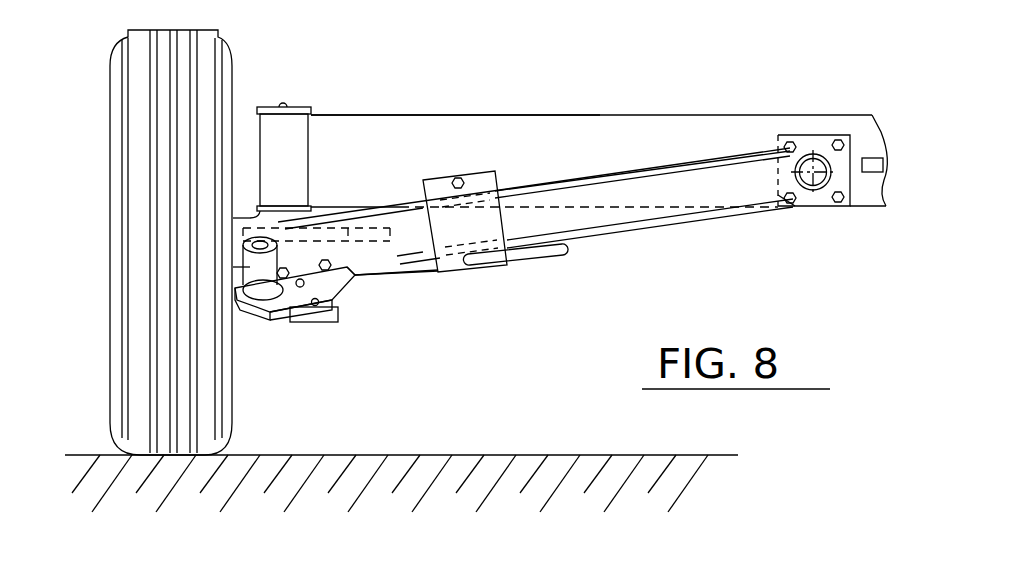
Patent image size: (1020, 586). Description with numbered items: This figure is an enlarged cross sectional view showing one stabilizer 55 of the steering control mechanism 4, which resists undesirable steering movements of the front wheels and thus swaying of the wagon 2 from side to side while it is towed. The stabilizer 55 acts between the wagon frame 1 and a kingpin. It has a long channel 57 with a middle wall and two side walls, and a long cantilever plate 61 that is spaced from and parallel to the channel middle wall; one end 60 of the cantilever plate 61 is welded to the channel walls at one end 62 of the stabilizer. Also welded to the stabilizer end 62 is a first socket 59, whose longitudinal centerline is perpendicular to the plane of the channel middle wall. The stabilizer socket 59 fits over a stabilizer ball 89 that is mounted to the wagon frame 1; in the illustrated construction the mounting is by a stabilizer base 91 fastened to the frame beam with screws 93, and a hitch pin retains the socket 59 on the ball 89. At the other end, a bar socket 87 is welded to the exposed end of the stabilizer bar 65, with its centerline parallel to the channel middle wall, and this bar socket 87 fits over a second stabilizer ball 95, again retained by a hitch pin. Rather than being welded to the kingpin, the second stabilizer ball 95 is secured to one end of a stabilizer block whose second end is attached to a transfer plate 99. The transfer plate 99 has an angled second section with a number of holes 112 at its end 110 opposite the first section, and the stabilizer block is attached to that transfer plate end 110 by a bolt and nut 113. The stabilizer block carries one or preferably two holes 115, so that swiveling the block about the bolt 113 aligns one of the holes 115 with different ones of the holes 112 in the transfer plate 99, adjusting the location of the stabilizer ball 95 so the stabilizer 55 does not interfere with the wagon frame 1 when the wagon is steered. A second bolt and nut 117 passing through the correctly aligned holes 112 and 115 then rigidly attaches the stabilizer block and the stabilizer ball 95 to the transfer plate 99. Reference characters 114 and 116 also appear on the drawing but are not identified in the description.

The wagon frame 1 is at (673, 112).
The wagon 2 is at (493, 106).
The steering control mechanism 4 is at (593, 240).
The stabilizer 55 is at (647, 235).
The channel 57 is at (657, 161).
The first socket 59 is at (838, 137).
The end of cantilever plate 60 is at (782, 210).
The cantilever plate 61 is at (573, 188).
The end of stabilizer 62 is at (750, 175).
The stabilizer bar 65 is at (386, 266).
The bar socket 87 is at (262, 273).
The stabilizer ball 89 is at (823, 208).
The stabilizer base 91 is at (873, 160).
The screws 93 is at (847, 153).
The second stabilizer ball 95 is at (270, 293).
The transfer plate 99 is at (330, 326).
The end of transfer plate 110 is at (338, 298).
The holes 112 is at (314, 306).
The bolt and nut 113 is at (350, 284).
The arm bottom surface 114 is at (382, 262).
The holes 115 is at (327, 262).
The plate tip 116 is at (362, 281).
The bolt and nut 117 is at (288, 270).